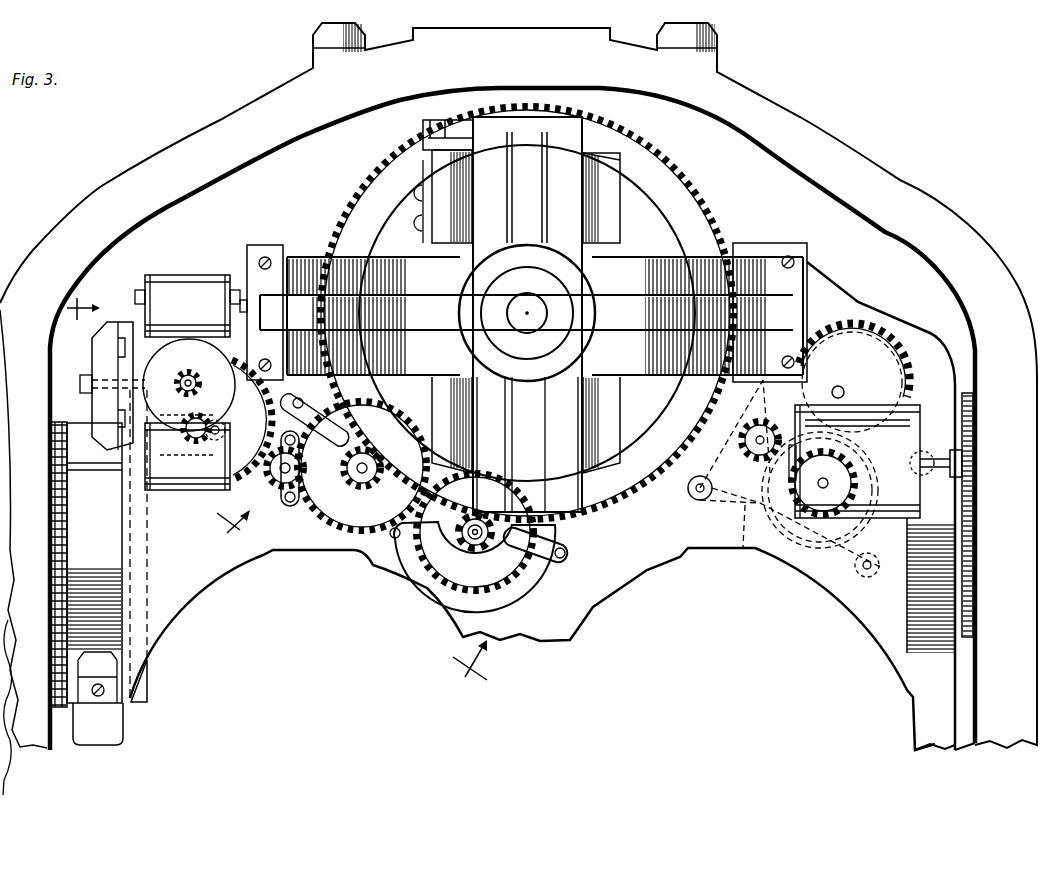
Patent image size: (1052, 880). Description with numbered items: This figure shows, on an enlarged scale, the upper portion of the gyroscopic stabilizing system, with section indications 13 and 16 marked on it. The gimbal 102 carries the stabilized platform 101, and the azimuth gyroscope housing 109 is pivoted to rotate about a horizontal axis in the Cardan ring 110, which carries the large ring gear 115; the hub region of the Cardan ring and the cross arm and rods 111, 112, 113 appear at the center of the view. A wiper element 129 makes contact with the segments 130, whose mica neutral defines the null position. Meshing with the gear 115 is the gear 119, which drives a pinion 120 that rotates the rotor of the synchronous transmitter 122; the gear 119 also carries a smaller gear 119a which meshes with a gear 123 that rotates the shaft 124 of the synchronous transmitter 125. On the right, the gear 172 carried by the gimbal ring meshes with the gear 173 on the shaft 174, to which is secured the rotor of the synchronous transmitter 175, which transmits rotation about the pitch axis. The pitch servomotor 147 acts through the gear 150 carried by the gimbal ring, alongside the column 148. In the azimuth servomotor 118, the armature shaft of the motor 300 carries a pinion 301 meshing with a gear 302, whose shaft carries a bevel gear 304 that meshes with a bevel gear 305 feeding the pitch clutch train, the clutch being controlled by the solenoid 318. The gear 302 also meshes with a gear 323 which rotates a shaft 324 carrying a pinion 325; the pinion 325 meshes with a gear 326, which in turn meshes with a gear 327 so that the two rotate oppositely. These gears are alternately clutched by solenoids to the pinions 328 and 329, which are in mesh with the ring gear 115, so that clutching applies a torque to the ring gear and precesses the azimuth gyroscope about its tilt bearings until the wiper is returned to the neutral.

The section line arrow 13 is at (83, 300).
The section line arrow 16 is at (347, 605).
The stabilized platform 101 is at (858, 302).
The gimbal 102 is at (795, 123).
The azimuth gyroscope housing 109 is at (608, 157).
The Cardan ring 110 is at (543, 118).
The center shaft 111 is at (518, 302).
The rod 112 is at (647, 257).
The cross arm 113 is at (553, 297).
The large gear 115 is at (667, 173).
The azimuth gyroscope servomotor 118 is at (527, 587).
The gear 119 is at (745, 530).
The pinion 119a is at (743, 478).
The pinion 120 is at (810, 545).
The synchronous transmitter 122 is at (835, 565).
The gear 123 is at (872, 328).
The shaft 124 is at (838, 385).
The synchronous transmitter 125 is at (877, 350).
The wiper element 129 is at (418, 153).
The segments 130 is at (440, 143).
The servomotor 147 is at (120, 320).
The column 148 is at (113, 725).
The gear 150 is at (62, 423).
The gear 172 is at (973, 555).
The gear 173 is at (970, 450).
The shaft 174 is at (927, 445).
The synchronous transmitter 175 is at (855, 418).
The motor 300 is at (180, 340).
The pinion 301 is at (197, 378).
The gear 302 is at (256, 425).
The bevel gear 304 is at (243, 387).
The bevel gear 305 is at (182, 393).
The electromagnet or solenoid 318 is at (173, 477).
The gear 323 is at (263, 500).
The shaft 324 is at (197, 267).
The pinion 325 is at (250, 488).
The gear 326 is at (343, 520).
The gear 327 is at (438, 575).
The pinion 328 is at (365, 464).
The pinion 329 is at (478, 527).